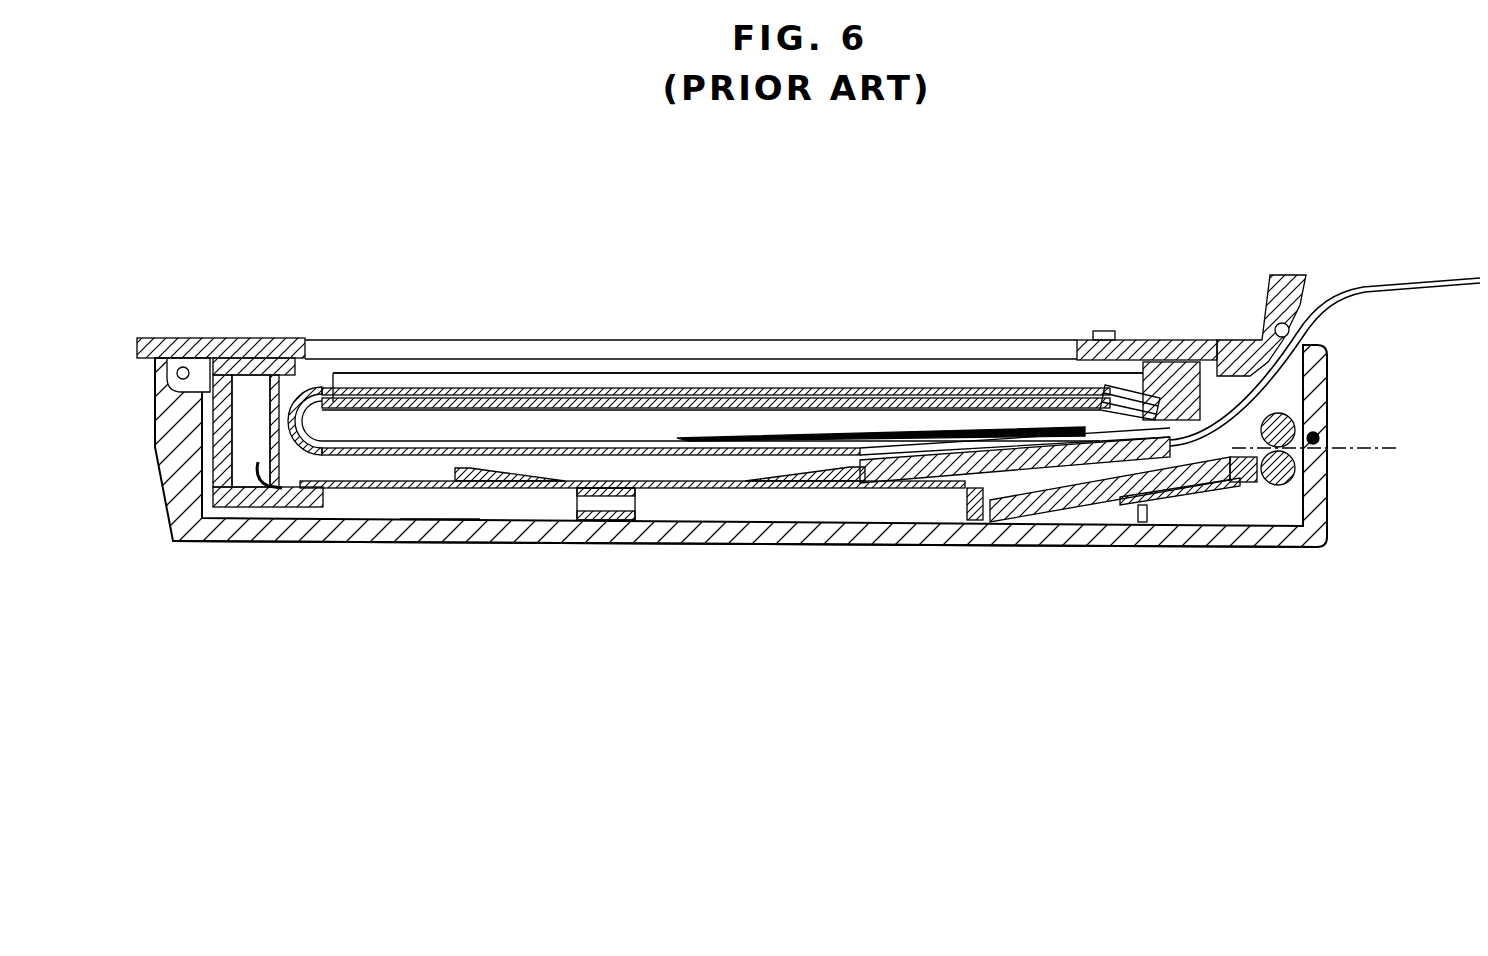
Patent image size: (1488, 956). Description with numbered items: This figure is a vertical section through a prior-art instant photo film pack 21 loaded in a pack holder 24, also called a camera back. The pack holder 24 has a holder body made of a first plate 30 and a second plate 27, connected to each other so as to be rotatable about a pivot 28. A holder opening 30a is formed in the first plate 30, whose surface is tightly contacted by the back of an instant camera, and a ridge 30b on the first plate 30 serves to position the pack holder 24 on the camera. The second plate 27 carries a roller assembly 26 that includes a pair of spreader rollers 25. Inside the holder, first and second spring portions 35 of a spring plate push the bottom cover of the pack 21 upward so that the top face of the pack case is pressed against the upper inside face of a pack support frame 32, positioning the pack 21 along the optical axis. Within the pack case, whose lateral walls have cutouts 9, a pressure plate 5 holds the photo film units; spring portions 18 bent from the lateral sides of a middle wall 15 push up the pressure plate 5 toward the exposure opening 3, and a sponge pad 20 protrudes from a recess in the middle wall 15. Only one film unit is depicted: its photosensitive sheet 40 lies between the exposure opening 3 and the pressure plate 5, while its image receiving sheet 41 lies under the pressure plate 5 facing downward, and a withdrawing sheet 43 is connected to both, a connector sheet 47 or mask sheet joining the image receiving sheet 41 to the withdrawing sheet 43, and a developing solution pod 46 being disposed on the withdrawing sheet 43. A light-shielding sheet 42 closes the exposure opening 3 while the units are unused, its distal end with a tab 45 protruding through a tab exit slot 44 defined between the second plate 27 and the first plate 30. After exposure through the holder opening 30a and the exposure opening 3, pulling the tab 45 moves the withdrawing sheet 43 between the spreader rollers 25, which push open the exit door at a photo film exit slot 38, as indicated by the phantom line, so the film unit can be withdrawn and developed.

The exposure opening 3 is at (1080, 390).
The pressure plate 5 is at (393, 450).
The cutouts 9 is at (546, 488).
The middle wall 15 is at (442, 519).
The spring portions 18 is at (487, 476).
The sponge pad 20 is at (1050, 482).
The instant photo film pack 21 is at (597, 362).
The pack holder 24 is at (660, 556).
The spreader rollers 25 is at (1297, 420).
The roller assembly 26 is at (1181, 516).
The second plate 27 is at (735, 547).
The pivot 28 is at (186, 366).
The first plate 30 is at (757, 338).
The holder opening 30a is at (345, 356).
The ridge 30b is at (1104, 331).
The pack support frame 32 is at (262, 497).
The first and second spring portions 35 is at (609, 520).
The photo film exit slot 38 is at (1322, 443).
The photosensitive sheet 40 is at (672, 386).
The image receiving sheet 41 is at (494, 442).
The light-shielding sheet 42 is at (832, 386).
The withdrawing sheet 43 is at (905, 436).
The tab exit slot 44 is at (1240, 335).
The tab 45 is at (1288, 325).
The developing solution pod 46 is at (341, 470).
The connector sheet 47 is at (975, 456).